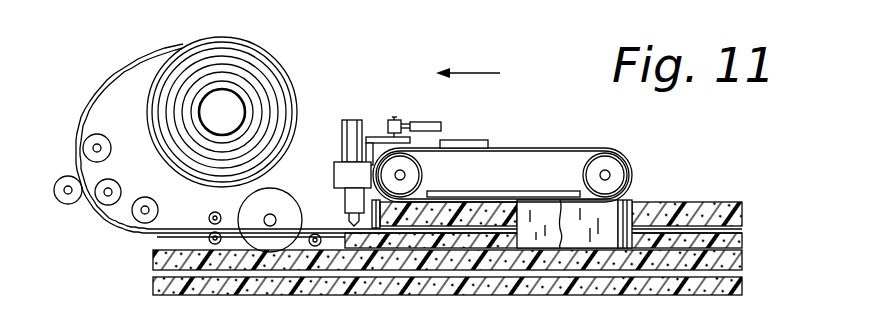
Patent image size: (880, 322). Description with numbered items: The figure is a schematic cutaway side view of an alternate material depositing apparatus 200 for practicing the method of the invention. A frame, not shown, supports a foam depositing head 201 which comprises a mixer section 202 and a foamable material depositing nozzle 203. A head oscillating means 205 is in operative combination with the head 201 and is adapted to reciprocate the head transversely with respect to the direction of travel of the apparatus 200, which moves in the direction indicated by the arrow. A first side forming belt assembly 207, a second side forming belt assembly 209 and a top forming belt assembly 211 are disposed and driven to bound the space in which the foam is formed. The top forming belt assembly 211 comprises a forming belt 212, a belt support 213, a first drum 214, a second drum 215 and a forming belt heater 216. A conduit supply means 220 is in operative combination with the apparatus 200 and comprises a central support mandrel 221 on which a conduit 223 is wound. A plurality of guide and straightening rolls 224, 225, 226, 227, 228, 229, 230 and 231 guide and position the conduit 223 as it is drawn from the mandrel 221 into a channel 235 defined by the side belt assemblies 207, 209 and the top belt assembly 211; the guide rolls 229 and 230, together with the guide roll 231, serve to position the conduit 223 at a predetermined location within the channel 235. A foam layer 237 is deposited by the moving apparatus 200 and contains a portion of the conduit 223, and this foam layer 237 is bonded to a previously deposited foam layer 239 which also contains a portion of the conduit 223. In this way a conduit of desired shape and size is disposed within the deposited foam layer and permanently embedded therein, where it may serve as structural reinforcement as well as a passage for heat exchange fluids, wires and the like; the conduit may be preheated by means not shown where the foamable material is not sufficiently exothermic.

The apparatus 200 is at (114, 44).
The foam depositing head 201 is at (347, 121).
The mixer section 202 is at (338, 163).
The foamable material depositing nozzle 203 is at (345, 198).
The head oscillating means 205 is at (410, 103).
The first side forming belt assembly 207 is at (414, 200).
The second side forming belt assembly 209 is at (633, 203).
The top forming belt assembly 211 is at (628, 166).
The forming belt 212 is at (530, 148).
The belt support 213 is at (506, 192).
The first drum 214 is at (412, 171).
The second drum 215 is at (618, 136).
The forming belt heater 216 is at (467, 140).
The conduit supply means 220 is at (222, 52).
The central support mandrel 221 is at (234, 107).
The conduit 223 is at (274, 63).
The guide and straightening roll 224 is at (96, 136).
The guide and straightening roll 225 is at (67, 177).
The guide and straightening roll 226 is at (108, 214).
The guide and straightening roll 227 is at (127, 212).
The guide and straightening roll 228 is at (211, 213).
The guide roll 229 is at (158, 238).
The guide roll 230 is at (315, 236).
The guide roll 231 is at (277, 253).
The channel 235 is at (444, 214).
The foam layer 237 is at (716, 207).
The previously deposited foam layer 239 is at (745, 287).